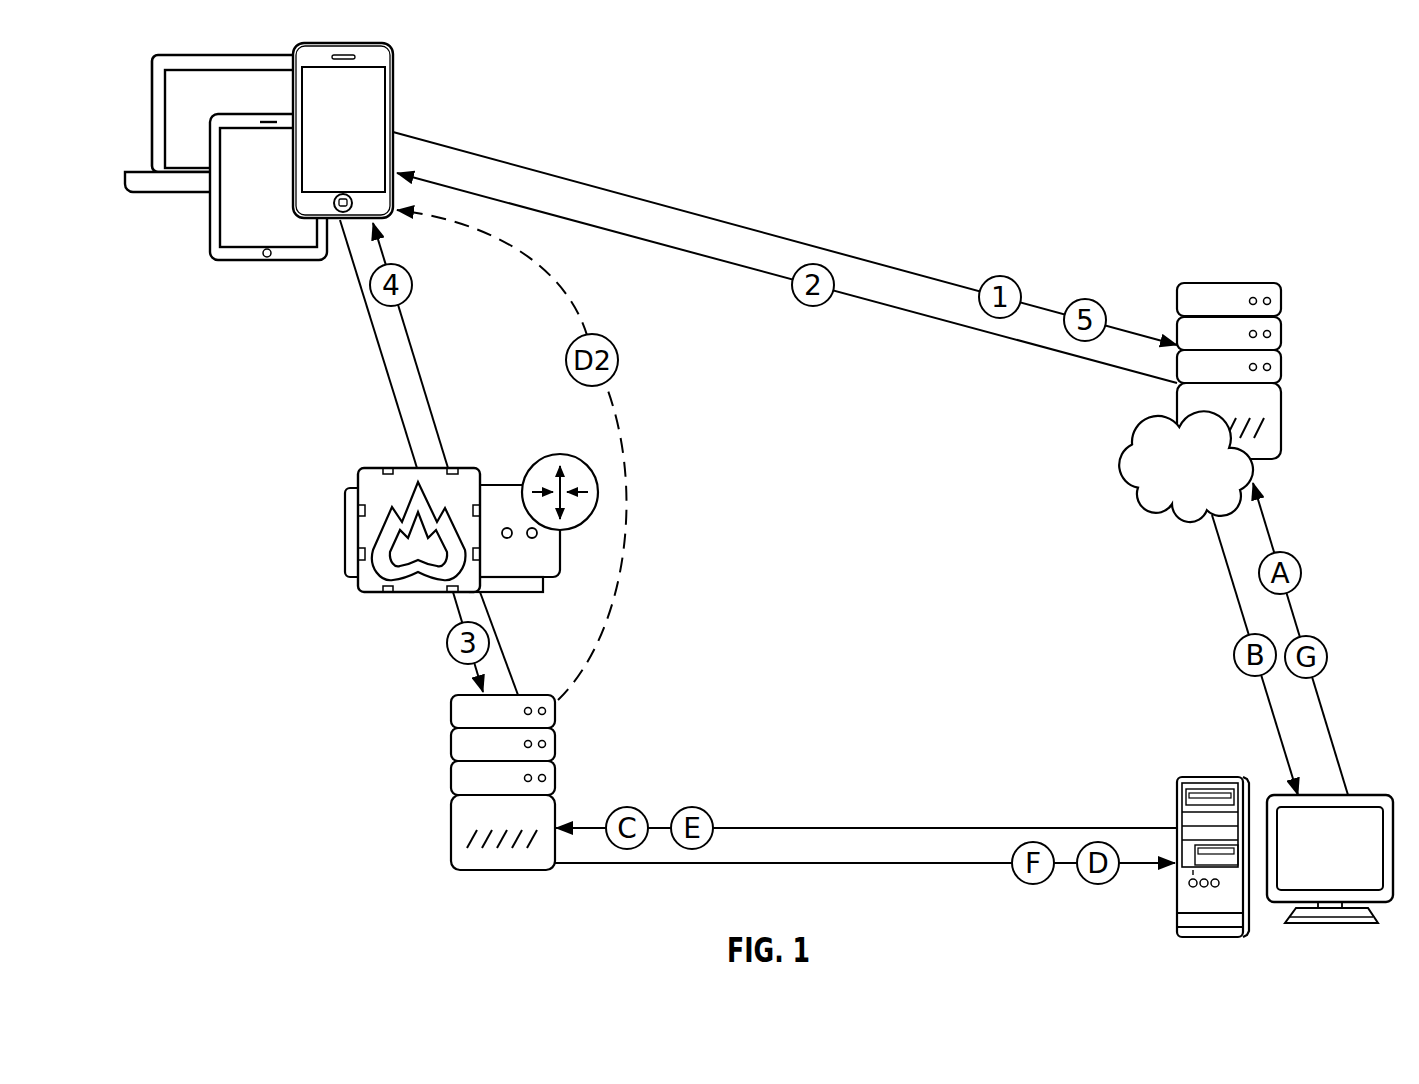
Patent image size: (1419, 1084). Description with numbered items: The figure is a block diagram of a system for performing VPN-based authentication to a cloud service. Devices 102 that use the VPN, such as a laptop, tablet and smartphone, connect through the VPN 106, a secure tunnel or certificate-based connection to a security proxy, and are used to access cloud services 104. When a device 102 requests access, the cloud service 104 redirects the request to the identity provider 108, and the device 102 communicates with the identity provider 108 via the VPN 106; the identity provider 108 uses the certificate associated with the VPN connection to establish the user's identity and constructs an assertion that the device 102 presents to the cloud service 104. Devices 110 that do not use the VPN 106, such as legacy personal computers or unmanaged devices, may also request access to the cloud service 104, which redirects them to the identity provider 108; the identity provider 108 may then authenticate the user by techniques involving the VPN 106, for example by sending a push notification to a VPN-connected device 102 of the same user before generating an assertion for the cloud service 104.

The device 102 is at (395, 92).
The cloud services 104 is at (1281, 365).
The VPN 106 is at (463, 468).
The identity provider 108 is at (555, 745).
The device not connected to the VPN 110 is at (1367, 790).